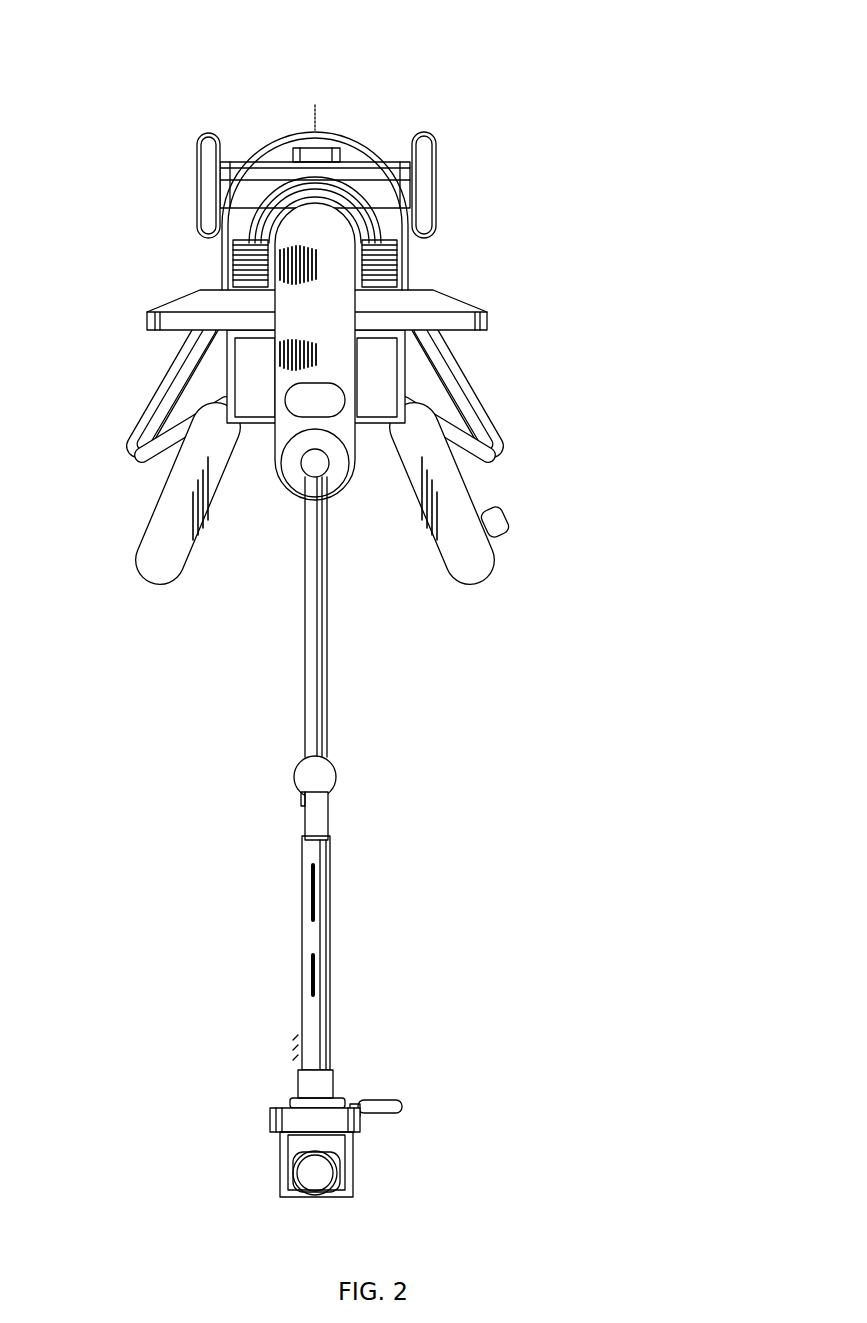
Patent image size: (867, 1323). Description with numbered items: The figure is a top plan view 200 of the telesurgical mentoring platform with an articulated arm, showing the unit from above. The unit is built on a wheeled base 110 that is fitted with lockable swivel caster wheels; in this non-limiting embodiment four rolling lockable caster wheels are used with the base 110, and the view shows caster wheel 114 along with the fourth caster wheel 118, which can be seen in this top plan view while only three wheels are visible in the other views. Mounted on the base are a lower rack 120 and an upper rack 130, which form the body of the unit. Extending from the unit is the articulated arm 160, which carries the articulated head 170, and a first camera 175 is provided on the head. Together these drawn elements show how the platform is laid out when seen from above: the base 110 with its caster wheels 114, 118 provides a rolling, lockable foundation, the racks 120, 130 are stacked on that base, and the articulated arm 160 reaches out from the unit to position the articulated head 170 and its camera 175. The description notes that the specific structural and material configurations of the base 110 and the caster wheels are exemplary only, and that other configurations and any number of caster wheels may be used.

The top plan view of the telesurgical platform 200 is at (238, 660).
The wheeled base 110 is at (355, 133).
The caster wheel 118 is at (218, 148).
The lower rack 120 is at (370, 230).
The upper rack 130 is at (347, 357).
The caster wheel 114 is at (502, 518).
The articulated arm 160 is at (325, 655).
The articulated head 170 is at (323, 797).
The first camera 175 is at (337, 1128).